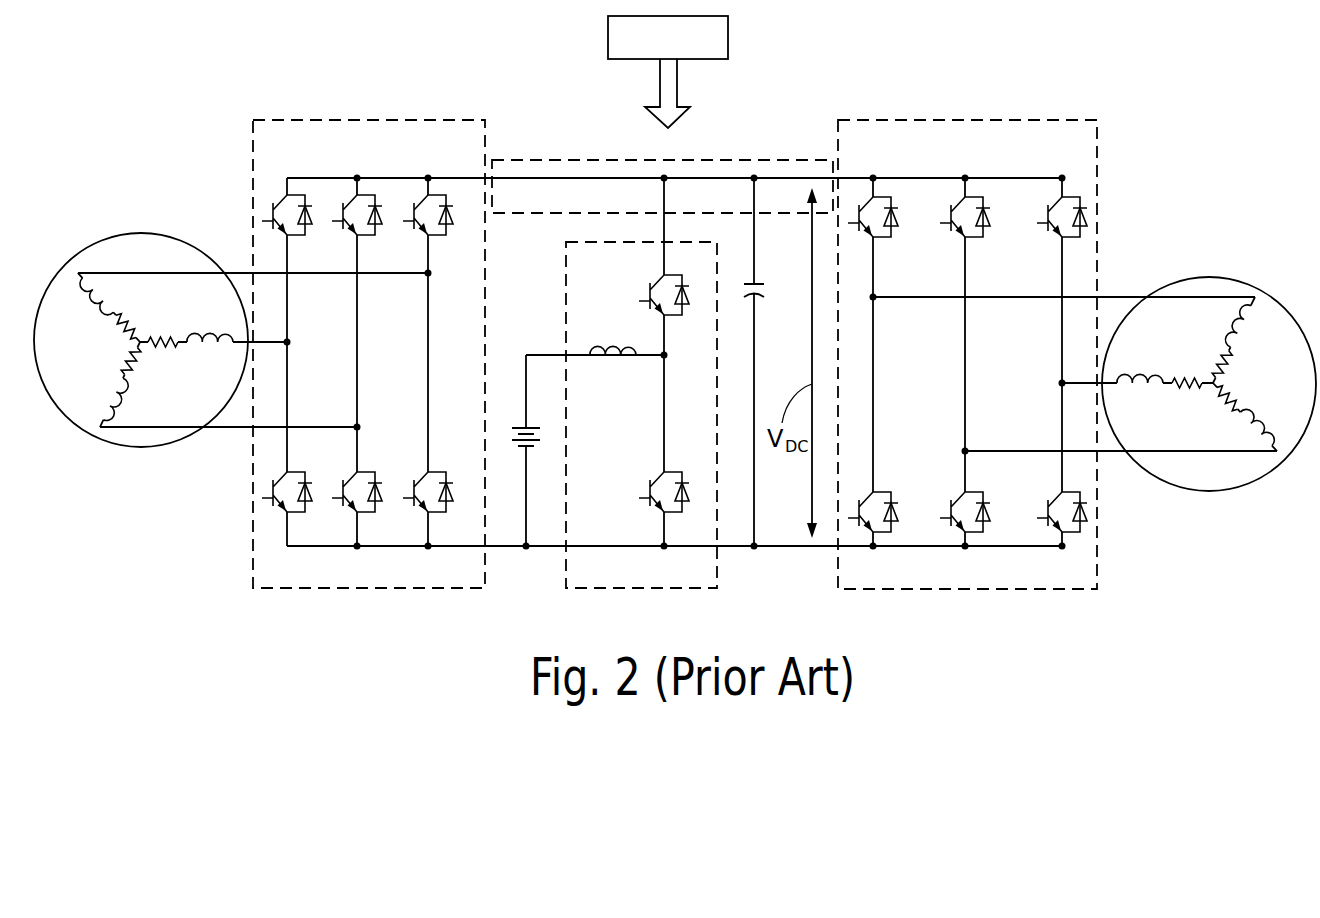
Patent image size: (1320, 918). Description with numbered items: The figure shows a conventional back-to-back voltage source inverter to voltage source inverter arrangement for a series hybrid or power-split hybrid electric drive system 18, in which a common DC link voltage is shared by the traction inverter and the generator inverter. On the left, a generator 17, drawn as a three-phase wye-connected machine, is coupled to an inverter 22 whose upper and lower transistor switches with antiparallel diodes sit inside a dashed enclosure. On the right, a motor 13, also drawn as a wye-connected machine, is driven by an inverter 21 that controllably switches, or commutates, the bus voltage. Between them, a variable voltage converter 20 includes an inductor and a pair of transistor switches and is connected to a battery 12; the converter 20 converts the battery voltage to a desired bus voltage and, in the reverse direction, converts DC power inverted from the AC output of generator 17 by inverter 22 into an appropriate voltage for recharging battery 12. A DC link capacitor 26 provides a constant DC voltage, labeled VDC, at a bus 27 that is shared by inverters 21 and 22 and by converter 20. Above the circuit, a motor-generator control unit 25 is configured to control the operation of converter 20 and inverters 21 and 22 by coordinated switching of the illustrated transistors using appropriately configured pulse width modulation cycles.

The battery pack 12 is at (523, 428).
The motor 13 is at (1208, 276).
The generator 17 is at (141, 233).
The electric drive system 18 is at (1112, 95).
The variable voltage converter 20 is at (566, 582).
The inverter 21 is at (933, 120).
The inverter 22 is at (347, 120).
The motor-generator control unit 25 is at (728, 40).
The DC link capacitor 26 is at (760, 286).
The bus 27 is at (530, 160).